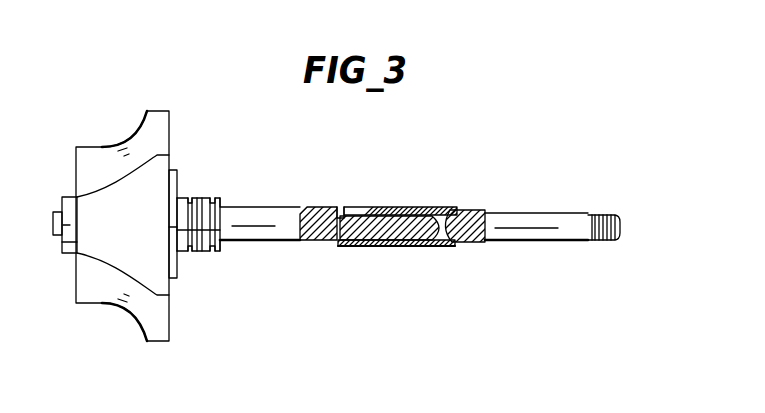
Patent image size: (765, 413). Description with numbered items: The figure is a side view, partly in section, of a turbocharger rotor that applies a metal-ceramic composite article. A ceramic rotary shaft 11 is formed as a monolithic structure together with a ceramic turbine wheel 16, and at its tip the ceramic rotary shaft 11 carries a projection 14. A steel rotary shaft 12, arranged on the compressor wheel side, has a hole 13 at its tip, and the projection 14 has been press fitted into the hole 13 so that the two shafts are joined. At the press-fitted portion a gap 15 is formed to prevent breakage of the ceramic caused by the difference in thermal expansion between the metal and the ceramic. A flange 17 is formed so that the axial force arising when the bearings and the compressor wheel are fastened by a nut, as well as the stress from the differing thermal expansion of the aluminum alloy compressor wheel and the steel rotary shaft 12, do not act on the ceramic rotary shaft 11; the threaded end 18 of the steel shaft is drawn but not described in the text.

The ceramic rotary shaft 11 is at (255, 207).
The steel rotary shaft 12 is at (540, 229).
The hole 13 is at (430, 207).
The projection 14 is at (385, 246).
The gap 15 is at (367, 182).
The ceramic turbine wheel 16 is at (162, 320).
The flange 17 is at (453, 210).
The threaded end 18 is at (602, 213).